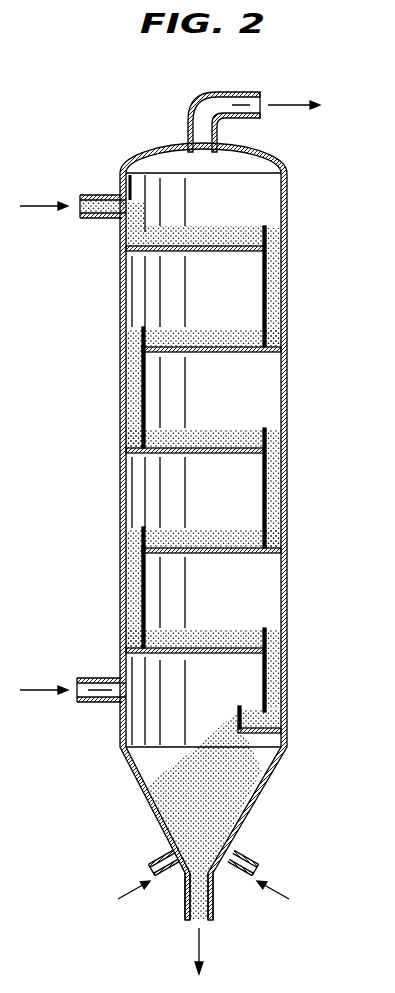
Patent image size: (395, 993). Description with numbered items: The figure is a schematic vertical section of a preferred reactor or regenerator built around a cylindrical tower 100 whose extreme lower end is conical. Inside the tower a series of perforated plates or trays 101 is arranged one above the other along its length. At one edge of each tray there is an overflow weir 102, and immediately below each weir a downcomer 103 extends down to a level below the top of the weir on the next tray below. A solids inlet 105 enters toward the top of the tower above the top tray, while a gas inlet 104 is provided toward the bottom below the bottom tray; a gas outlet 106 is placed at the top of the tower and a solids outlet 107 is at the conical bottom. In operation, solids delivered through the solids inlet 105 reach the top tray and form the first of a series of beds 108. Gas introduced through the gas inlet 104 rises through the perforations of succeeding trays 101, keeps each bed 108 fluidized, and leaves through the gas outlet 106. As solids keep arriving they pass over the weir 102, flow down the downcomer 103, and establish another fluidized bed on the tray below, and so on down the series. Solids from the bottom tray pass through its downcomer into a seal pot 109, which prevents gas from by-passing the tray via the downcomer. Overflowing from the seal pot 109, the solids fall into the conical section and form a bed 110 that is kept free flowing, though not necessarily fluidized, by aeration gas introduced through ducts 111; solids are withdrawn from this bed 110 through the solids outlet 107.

The cylindrical tower 100 is at (287, 452).
The perforated plates or trays 101 is at (200, 253).
The overflow weir 102 is at (268, 233).
The downcomer 103 is at (264, 297).
The gas inlet 104 is at (99, 677).
The solids inlet 105 is at (101, 195).
The gas outlet 106 is at (200, 110).
The solids outlet 107 is at (214, 896).
The beds 108 is at (206, 230).
The seal pot 109 is at (237, 717).
The bed 110 is at (225, 790).
The ducts 111 is at (168, 858).